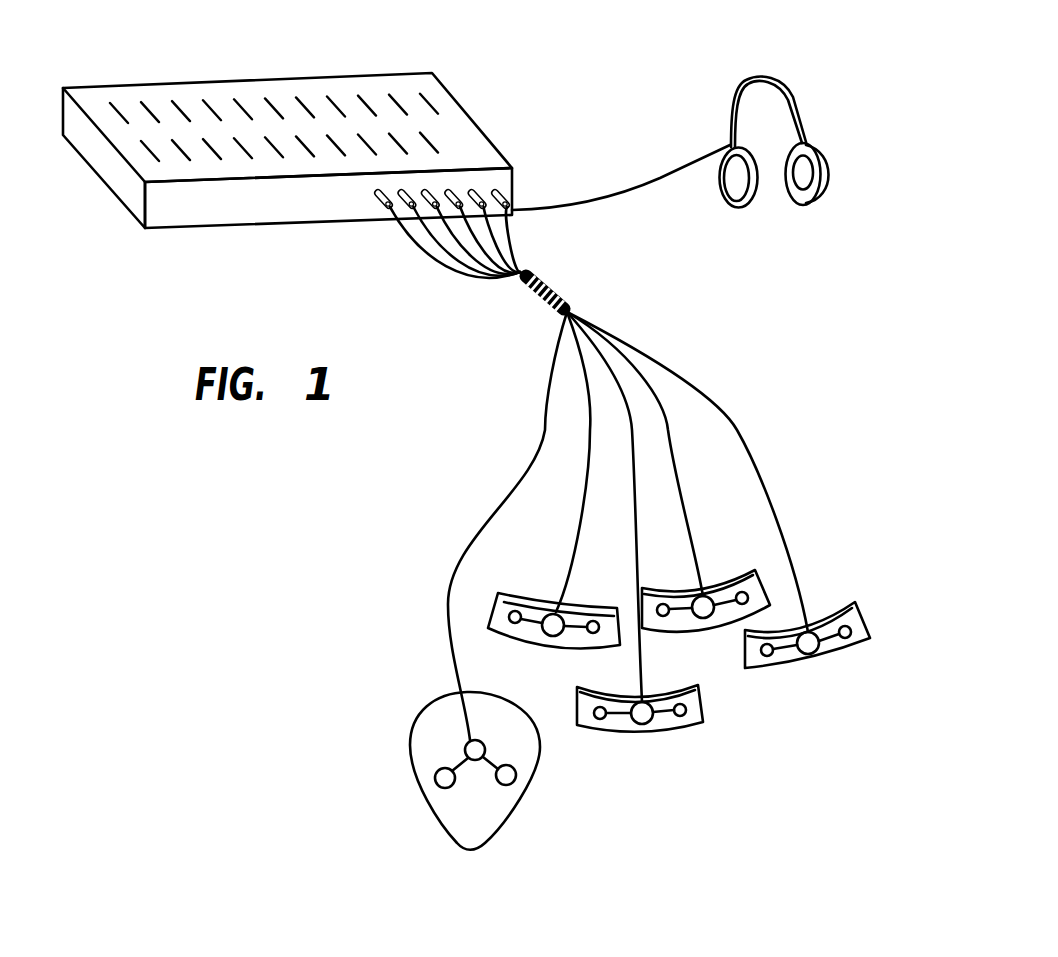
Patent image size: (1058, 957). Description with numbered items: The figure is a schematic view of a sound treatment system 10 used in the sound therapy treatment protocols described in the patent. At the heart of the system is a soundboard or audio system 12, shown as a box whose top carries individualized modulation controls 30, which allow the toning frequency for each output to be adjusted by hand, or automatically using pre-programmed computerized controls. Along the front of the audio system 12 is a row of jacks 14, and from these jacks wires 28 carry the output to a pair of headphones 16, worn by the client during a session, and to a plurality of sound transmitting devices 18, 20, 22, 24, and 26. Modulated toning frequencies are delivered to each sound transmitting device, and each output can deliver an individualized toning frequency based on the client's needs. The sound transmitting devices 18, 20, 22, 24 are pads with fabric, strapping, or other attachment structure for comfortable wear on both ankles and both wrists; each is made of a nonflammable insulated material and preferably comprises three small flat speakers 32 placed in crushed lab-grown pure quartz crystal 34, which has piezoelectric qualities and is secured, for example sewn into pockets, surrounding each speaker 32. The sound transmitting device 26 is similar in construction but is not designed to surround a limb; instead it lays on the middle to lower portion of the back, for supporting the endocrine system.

The sound treatment system 10 is at (240, 531).
The audio system 12 is at (201, 242).
The jacks 14 is at (378, 190).
The headphones 16 is at (803, 107).
The sound transmitting device 18 is at (853, 615).
The sound transmitting device 20 is at (763, 602).
The sound transmitting device 22 is at (693, 720).
The sound transmitting device 24 is at (520, 645).
The sound transmitting device 26 is at (420, 742).
The wires 28 is at (641, 188).
The modulation controls 30 is at (343, 115).
The speakers 32 is at (548, 614).
The quartz crystal 34 is at (480, 803).